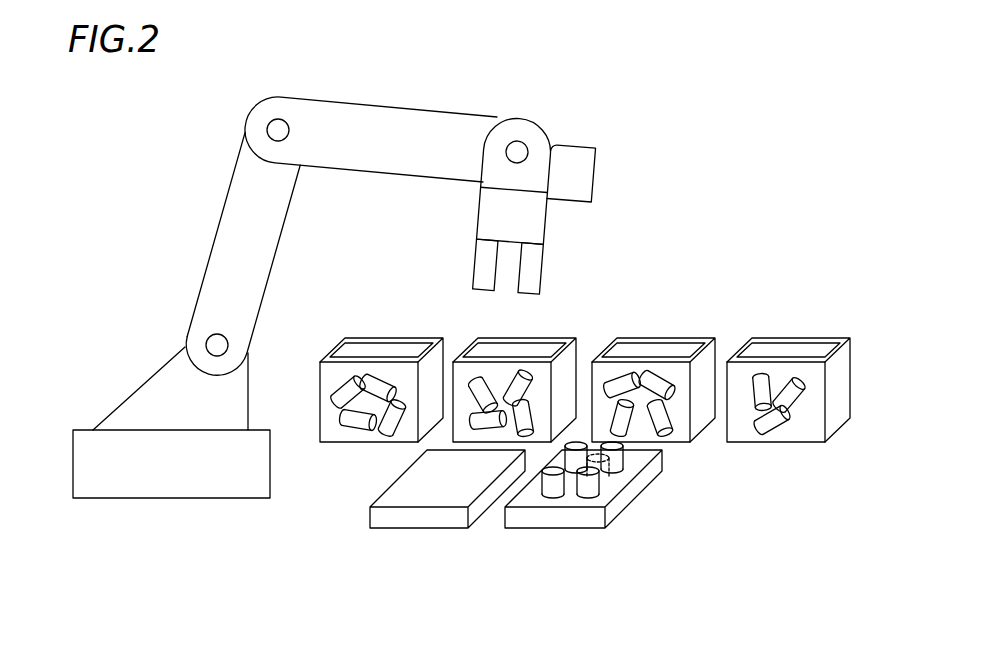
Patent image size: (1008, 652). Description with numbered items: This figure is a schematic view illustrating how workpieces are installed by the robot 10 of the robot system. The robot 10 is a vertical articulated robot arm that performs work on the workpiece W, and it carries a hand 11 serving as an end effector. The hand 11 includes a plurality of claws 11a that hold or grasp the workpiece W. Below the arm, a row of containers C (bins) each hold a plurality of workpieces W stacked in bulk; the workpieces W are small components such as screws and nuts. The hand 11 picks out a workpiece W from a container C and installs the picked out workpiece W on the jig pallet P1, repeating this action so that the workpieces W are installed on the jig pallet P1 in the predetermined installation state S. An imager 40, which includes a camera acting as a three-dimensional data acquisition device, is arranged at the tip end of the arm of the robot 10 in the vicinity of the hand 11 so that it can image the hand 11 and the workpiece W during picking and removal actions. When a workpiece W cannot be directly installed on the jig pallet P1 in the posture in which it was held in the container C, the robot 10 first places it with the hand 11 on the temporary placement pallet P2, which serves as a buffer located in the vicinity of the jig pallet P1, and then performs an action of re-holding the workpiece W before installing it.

The robot 10 is at (578, 110).
The hand 11 is at (510, 205).
The claws 11a is at (560, 228).
The imager 40 is at (598, 171).
The container C is at (405, 337).
The workpiece W is at (375, 347).
The jig pallet P1 is at (562, 518).
The temporary placement pallet P2 is at (422, 518).
The installation state S is at (640, 524).